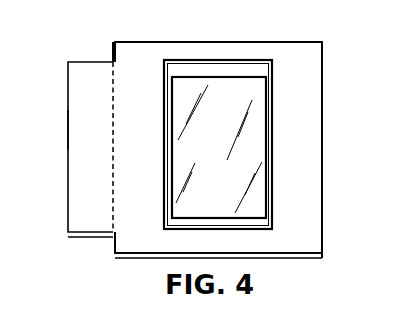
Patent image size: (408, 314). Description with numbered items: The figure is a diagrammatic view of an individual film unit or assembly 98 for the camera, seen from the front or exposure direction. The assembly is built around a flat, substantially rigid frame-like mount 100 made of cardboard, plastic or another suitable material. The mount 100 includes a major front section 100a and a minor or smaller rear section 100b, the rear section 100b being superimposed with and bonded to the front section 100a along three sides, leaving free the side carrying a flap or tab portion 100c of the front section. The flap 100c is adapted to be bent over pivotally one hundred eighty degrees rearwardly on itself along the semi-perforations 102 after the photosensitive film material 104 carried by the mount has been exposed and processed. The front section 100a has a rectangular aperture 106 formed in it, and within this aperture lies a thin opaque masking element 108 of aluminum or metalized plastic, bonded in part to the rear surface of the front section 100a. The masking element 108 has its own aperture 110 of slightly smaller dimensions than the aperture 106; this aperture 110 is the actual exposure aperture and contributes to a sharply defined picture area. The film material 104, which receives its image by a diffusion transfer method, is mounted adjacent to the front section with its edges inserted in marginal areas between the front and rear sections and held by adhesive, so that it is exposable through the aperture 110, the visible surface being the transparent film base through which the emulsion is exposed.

The film unit or assembly 98 is at (108, 56).
The frame-like mount 100 is at (224, 41).
The major front section 100a is at (296, 156).
The minor rear section 100b is at (150, 259).
The flap or tab portion 100c is at (68, 133).
The semi-perforations 102 is at (112, 102).
The photosensitive film material 104 is at (228, 145).
The rectangular aperture 106 is at (268, 96).
The opaque masking element 108 is at (263, 70).
The exposure aperture 110 is at (262, 130).